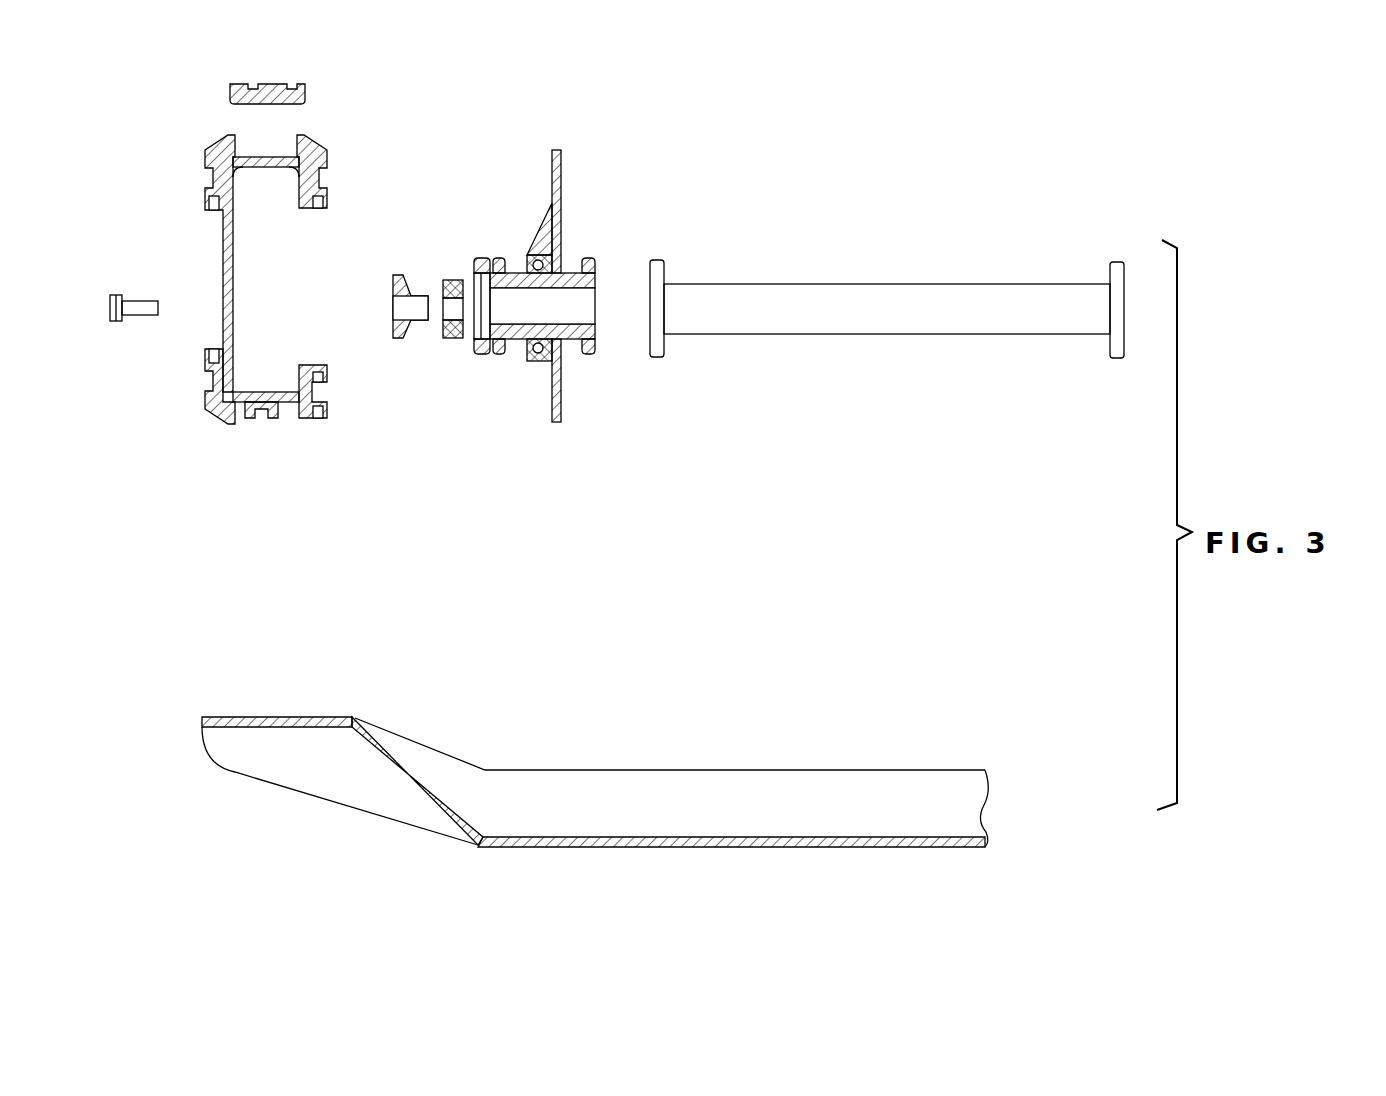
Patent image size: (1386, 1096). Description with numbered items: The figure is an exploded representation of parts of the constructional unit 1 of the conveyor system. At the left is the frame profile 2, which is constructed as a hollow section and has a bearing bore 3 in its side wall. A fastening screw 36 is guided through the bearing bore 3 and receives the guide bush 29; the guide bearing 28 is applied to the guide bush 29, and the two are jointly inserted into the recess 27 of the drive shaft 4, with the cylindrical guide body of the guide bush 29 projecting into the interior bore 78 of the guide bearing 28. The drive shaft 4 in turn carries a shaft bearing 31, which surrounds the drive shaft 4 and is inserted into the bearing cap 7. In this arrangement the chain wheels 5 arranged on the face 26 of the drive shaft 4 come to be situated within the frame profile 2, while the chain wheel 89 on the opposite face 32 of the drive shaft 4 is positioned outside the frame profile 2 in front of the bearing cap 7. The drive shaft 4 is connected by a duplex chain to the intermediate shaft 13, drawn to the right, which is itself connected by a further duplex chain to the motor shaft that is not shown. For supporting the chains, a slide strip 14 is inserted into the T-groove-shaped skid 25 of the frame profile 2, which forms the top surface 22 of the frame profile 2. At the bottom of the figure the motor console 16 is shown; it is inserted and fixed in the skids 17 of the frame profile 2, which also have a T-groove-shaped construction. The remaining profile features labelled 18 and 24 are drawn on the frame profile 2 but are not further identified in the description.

The constructional unit 1 is at (133, 598).
The frame profile 2 is at (267, 289).
The bearing bore 3 is at (229, 310).
The drive shaft 4 is at (586, 322).
The chain wheels 5 is at (480, 356).
The bearing cap 7 is at (561, 200).
The intermediate shaft 13 is at (900, 335).
The slide strip 14 is at (228, 95).
The motor console 16 is at (575, 790).
The skids 17 is at (276, 420).
The right retaining clip 18 is at (328, 172).
The top surface 22 is at (292, 170).
The left retaining clip 24 is at (215, 175).
The T-groove-shaped skid 25 is at (277, 148).
The face of the drive shaft 26 is at (456, 315).
The recess of the drive shaft 27 is at (494, 260).
The guide bearing 28 is at (428, 346).
The guide bush 29 is at (418, 276).
The shaft bearing 31 is at (526, 364).
The face of the drive shaft 32 is at (597, 290).
The fastening screw 36 is at (128, 300).
The interior bore 78 is at (450, 312).
The chain wheel 89 is at (586, 258).